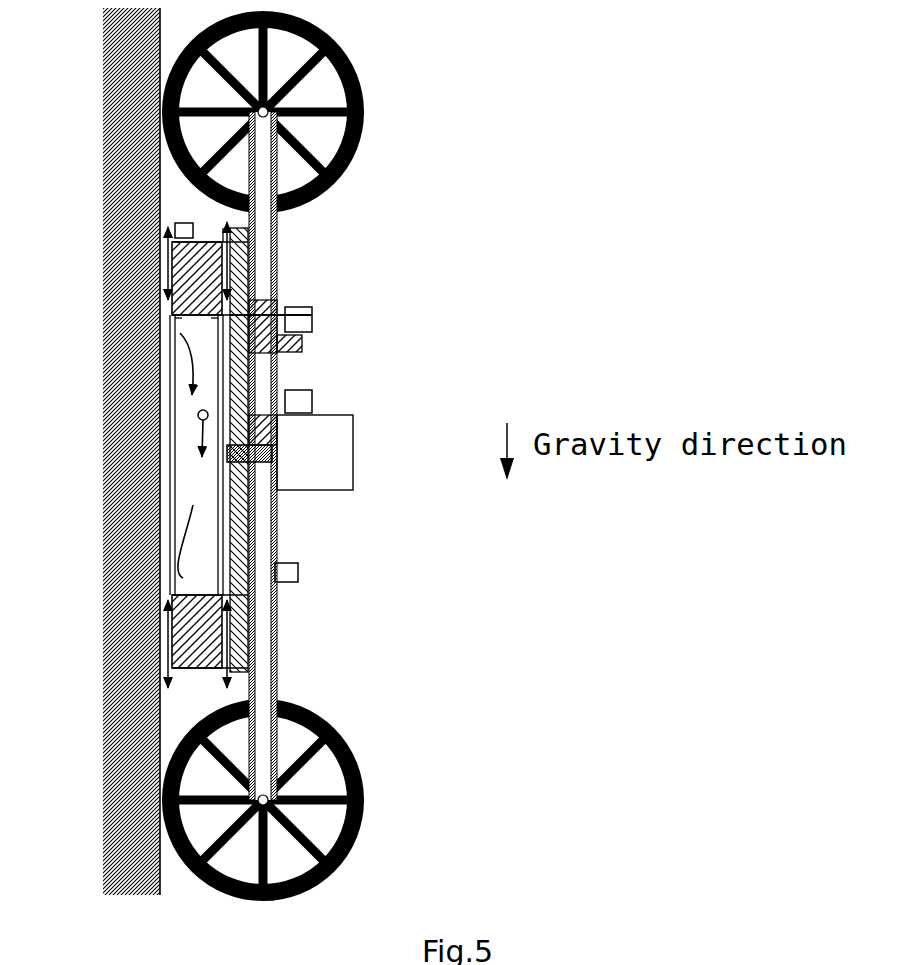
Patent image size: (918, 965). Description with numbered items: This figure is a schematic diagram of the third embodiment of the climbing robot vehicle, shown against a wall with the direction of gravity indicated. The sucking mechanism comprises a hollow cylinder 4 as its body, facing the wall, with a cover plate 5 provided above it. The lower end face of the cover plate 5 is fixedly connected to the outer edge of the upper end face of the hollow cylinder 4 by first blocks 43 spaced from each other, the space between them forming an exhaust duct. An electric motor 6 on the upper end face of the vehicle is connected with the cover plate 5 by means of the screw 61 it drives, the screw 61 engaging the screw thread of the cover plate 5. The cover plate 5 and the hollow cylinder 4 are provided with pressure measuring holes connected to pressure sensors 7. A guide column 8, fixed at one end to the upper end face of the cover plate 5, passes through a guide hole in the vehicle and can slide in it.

The hollow cylinder 4 is at (180, 290).
The cover plate 5 is at (252, 540).
The electric motor 6 is at (307, 472).
The pressure sensor 7 is at (176, 226).
The guide column 8 is at (290, 347).
The first block 43 is at (230, 258).
The screw 61 is at (257, 463).